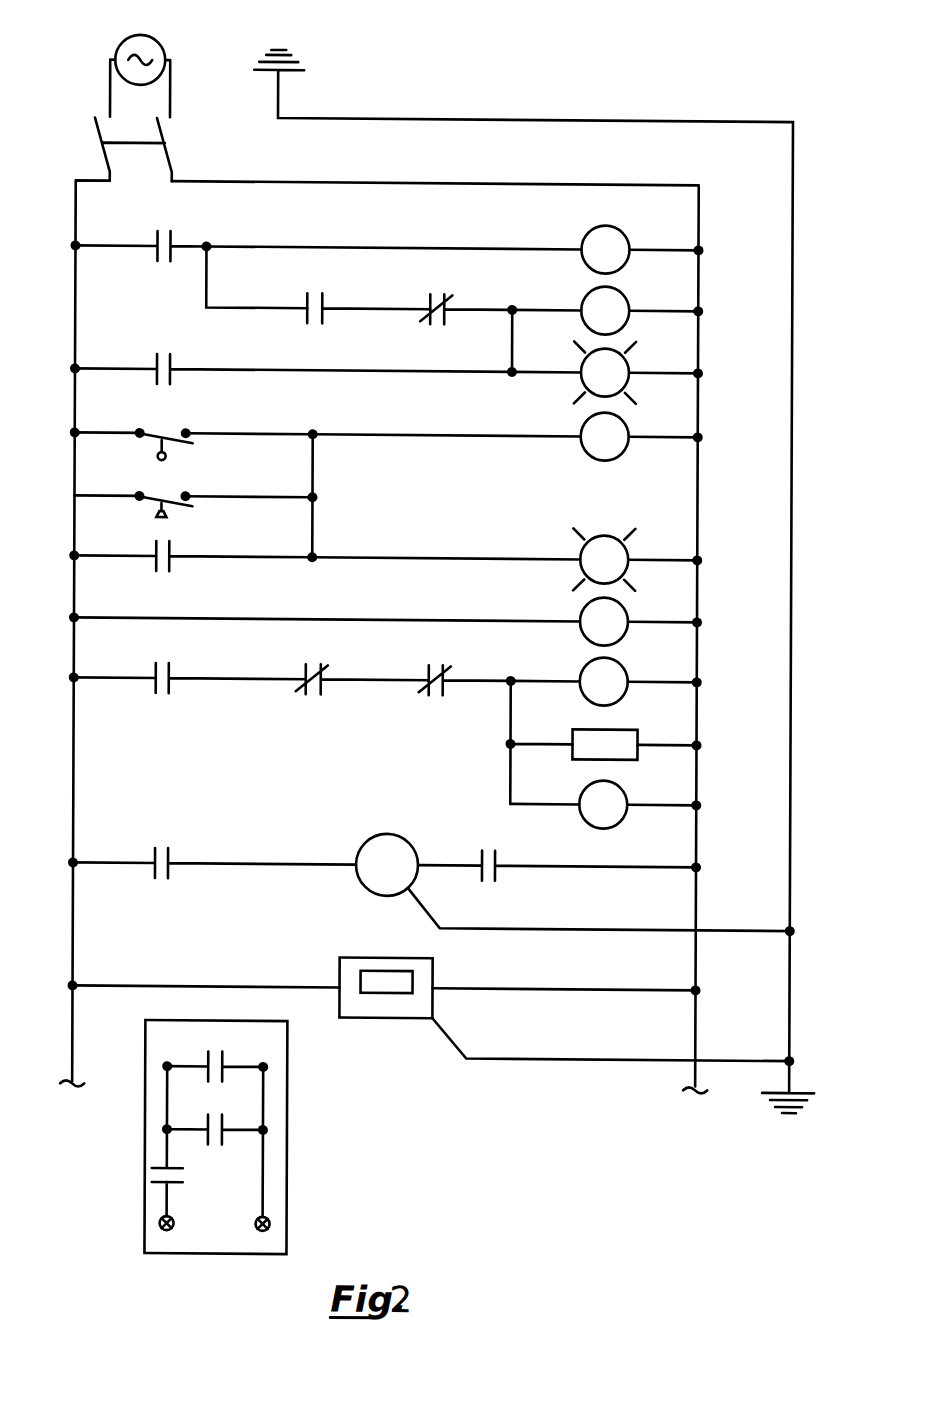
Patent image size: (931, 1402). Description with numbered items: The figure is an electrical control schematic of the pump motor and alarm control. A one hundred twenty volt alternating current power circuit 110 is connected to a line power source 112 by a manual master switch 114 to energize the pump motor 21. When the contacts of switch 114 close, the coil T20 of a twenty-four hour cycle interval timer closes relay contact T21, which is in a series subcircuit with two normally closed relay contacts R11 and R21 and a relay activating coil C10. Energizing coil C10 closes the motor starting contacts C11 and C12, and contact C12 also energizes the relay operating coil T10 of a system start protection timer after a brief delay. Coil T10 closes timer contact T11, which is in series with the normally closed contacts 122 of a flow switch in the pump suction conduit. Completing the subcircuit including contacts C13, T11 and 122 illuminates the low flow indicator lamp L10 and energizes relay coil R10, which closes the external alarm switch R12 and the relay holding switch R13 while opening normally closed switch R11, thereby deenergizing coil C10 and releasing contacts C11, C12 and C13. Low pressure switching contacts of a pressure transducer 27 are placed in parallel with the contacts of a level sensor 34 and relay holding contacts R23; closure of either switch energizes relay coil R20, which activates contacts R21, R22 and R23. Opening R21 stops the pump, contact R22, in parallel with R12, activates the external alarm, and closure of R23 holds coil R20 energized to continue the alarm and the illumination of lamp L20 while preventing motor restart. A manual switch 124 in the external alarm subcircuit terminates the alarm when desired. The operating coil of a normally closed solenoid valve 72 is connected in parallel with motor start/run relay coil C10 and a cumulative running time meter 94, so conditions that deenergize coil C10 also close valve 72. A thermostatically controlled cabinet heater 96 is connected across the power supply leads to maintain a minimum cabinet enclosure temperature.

The power circuit 110 is at (545, 88).
The line power source 112 is at (138, 37).
The manual master switch 114 is at (173, 155).
The motor relay contact C13 is at (182, 205).
The relay operating coil of system start protection timer T10 is at (655, 221).
The timer contact T11 is at (338, 271).
The normally closed contacts of flow switch 122 is at (458, 273).
The relay coil R10 is at (655, 283).
The relay holding switch R13 is at (182, 335).
The low flow indicator lamp L10 is at (655, 345).
The level sensor 34 is at (161, 442).
The pressure transducer 27 is at (161, 505).
The relay coil R20 is at (655, 410).
The relay holding contact R23 is at (188, 600).
The lamp L20 is at (655, 533).
The coil of 24 hour cycle interval timer T20 is at (655, 593).
The relay contact of cycle timer T21 is at (180, 640).
The normally closed relay contact R21 is at (330, 640).
The normally closed relay contact R11 is at (458, 641).
The relay activating coil C10 is at (655, 652).
The cumulative running time meter 94 is at (638, 732).
The normally closed solenoid valve 72 is at (627, 787).
The motor starting contact C11 is at (180, 825).
The pump motor 21 is at (407, 838).
The motor relay contact C12 is at (510, 828).
The thermostatically controlled cabinet heater 96 is at (368, 1019).
The external alarm switch R12 is at (240, 1040).
The relay contact R22 is at (240, 1103).
The manual switch 124 is at (172, 1186).